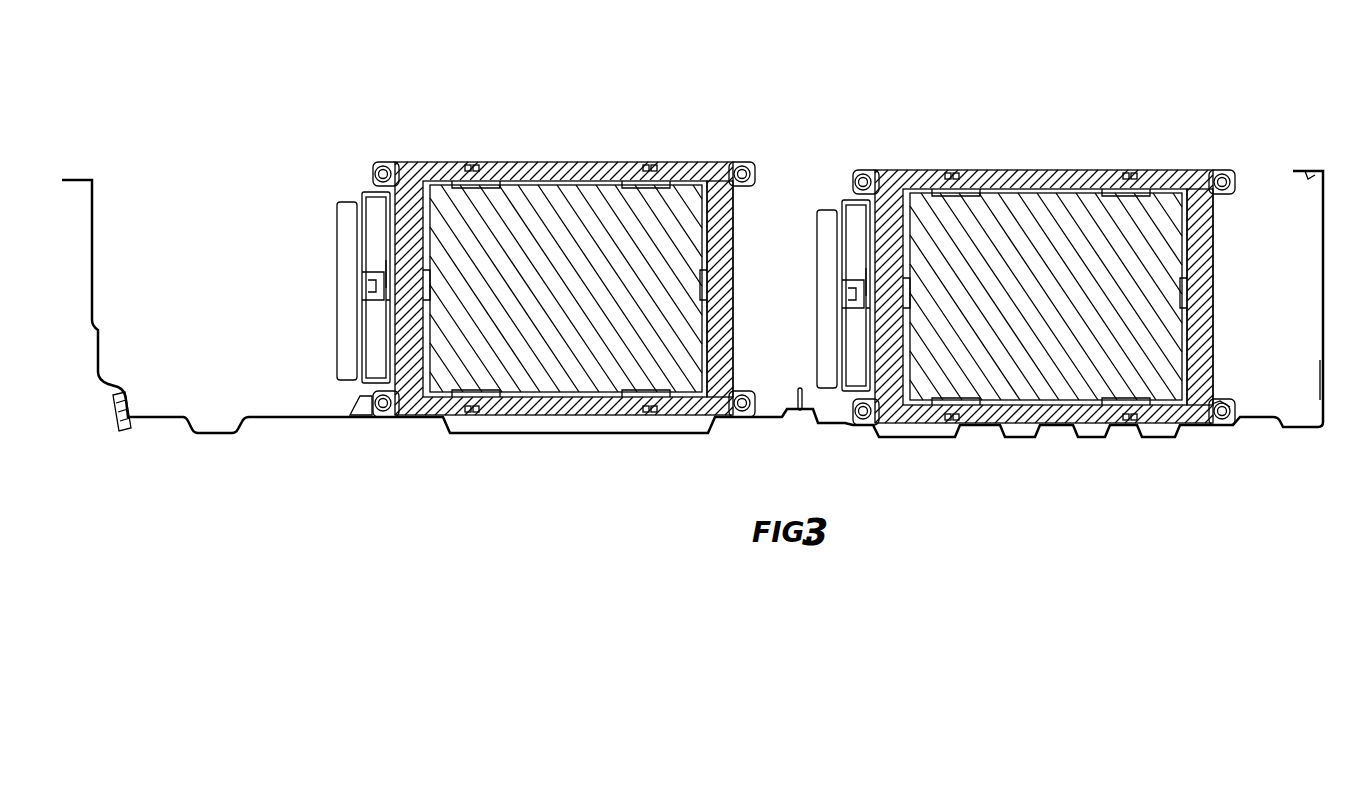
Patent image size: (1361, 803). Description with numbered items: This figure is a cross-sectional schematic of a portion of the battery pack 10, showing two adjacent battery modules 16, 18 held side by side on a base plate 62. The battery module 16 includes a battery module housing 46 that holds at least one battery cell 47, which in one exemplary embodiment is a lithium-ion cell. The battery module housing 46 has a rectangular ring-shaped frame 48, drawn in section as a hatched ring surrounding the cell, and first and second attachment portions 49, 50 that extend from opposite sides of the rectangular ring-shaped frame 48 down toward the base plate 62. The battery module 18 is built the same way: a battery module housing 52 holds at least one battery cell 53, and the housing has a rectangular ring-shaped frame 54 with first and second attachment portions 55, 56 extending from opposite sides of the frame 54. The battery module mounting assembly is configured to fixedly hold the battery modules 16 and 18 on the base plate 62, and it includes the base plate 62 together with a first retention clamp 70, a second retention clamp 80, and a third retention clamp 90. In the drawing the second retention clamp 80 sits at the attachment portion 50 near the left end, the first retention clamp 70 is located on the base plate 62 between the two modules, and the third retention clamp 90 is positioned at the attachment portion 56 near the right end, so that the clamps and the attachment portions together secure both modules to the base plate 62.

The battery pack 10 is at (956, 80).
The battery module 16 is at (574, 162).
The battery module 18 is at (1031, 171).
The battery module housing 46 is at (695, 178).
The battery cell 47 is at (486, 215).
The rectangular ring-shaped frame 48 is at (720, 233).
The first attachment portion 49 is at (744, 416).
The second attachment portion 50 is at (384, 418).
The battery module housing 52 is at (1163, 186).
The battery cell 53 is at (975, 212).
The rectangular ring-shaped frame 54 is at (1205, 250).
The first attachment portion 55 is at (867, 421).
The second attachment portion 56 is at (1226, 424).
The base plate 62 is at (268, 415).
The first retention clamp 70 is at (813, 425).
The second retention clamp 80 is at (362, 400).
The third retention clamp 90 is at (1222, 404).